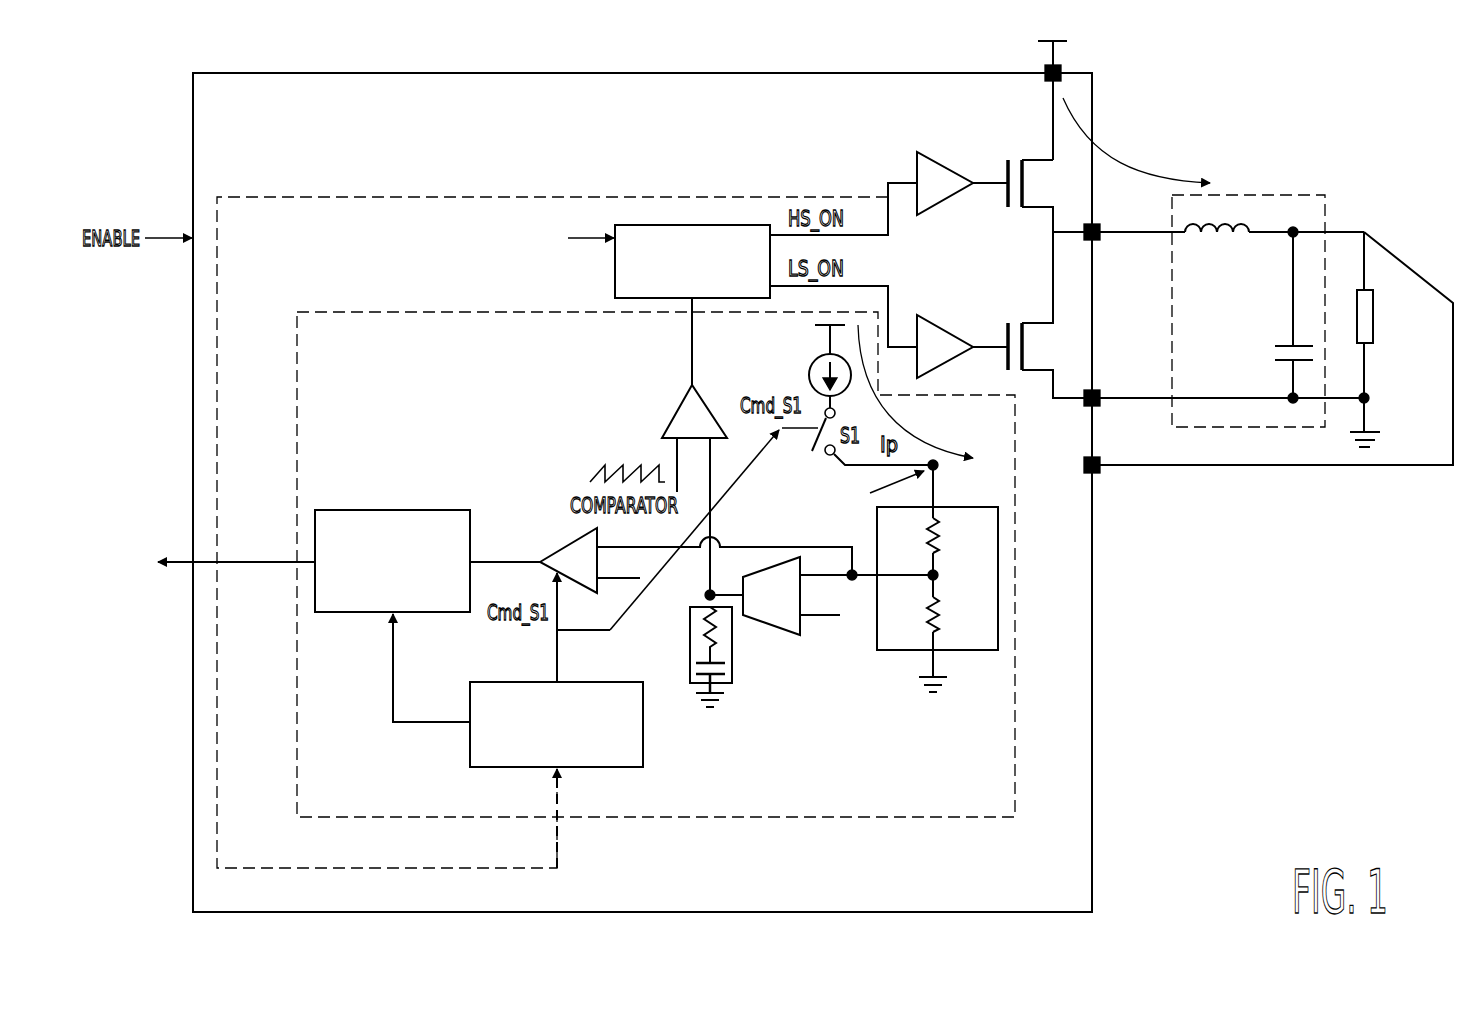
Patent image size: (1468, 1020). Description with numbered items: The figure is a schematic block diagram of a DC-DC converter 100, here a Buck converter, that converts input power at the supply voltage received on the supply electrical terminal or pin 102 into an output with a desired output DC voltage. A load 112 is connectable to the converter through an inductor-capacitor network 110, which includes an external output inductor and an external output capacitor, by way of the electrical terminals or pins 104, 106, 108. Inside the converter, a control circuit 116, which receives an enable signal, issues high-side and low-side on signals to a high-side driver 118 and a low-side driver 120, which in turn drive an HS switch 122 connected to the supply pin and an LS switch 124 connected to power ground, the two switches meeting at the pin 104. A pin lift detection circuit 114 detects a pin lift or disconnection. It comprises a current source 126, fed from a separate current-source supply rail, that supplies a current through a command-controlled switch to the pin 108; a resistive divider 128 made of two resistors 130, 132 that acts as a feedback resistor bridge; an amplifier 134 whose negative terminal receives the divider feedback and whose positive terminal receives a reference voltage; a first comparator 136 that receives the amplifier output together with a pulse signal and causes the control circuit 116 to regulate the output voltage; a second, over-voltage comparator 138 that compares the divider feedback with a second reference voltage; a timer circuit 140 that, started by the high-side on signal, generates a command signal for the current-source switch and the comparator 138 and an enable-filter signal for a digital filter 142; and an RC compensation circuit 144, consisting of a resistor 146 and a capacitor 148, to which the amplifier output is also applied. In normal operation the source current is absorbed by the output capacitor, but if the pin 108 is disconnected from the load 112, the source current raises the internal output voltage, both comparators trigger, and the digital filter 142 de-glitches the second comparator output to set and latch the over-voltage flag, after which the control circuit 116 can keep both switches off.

The DC-DC converter 100 is at (742, 73).
The supply electrical terminal or pin 102 is at (1062, 68).
The electrical terminal or pin 104 is at (1100, 240).
The electrical terminal or pin 106 is at (1098, 392).
The electrical terminal or pin 108 is at (1100, 474).
The inductor-capacitor (LC) network 110 is at (1305, 195).
The load 112 is at (1374, 340).
The pin lift detection circuit 114 is at (428, 310).
The control circuit 116 is at (615, 276).
The high-side (HS) driver 118 is at (935, 172).
The low-side (LS) driver 120 is at (940, 330).
The HS switch 122 is at (1026, 185).
The LS switch 124 is at (1026, 348).
The current source 126 is at (810, 366).
The resistive divider 128 is at (906, 624).
The resistor 130 is at (945, 533).
The resistor 132 is at (925, 620).
The amplifier 134 is at (795, 638).
The first comparator 136 is at (683, 396).
The second comparator 138 is at (570, 530).
The timer circuit 140 is at (470, 745).
The digital filter 142 is at (384, 508).
The resistor-capacitor (RC) compensation circuit 144 is at (735, 655).
The resistor 146 is at (700, 626).
The capacitor 148 is at (690, 670).